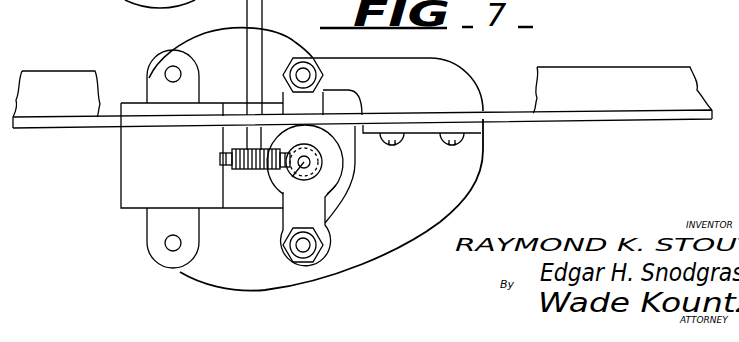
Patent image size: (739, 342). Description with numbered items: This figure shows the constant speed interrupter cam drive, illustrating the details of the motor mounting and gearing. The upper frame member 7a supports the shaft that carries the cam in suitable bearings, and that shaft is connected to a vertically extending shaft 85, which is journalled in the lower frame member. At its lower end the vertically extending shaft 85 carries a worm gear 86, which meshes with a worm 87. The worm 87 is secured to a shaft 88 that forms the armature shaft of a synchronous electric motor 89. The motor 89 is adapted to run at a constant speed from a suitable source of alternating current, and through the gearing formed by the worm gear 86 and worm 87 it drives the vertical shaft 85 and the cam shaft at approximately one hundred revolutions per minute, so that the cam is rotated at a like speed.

The upper frame member 7a is at (508, 114).
The vertically extending shaft 85 is at (263, 15).
The worm gear 86 is at (220, 160).
The worm 87 is at (348, 183).
The shaft 88 is at (284, 187).
The synchronous electric motor 89 is at (297, 53).